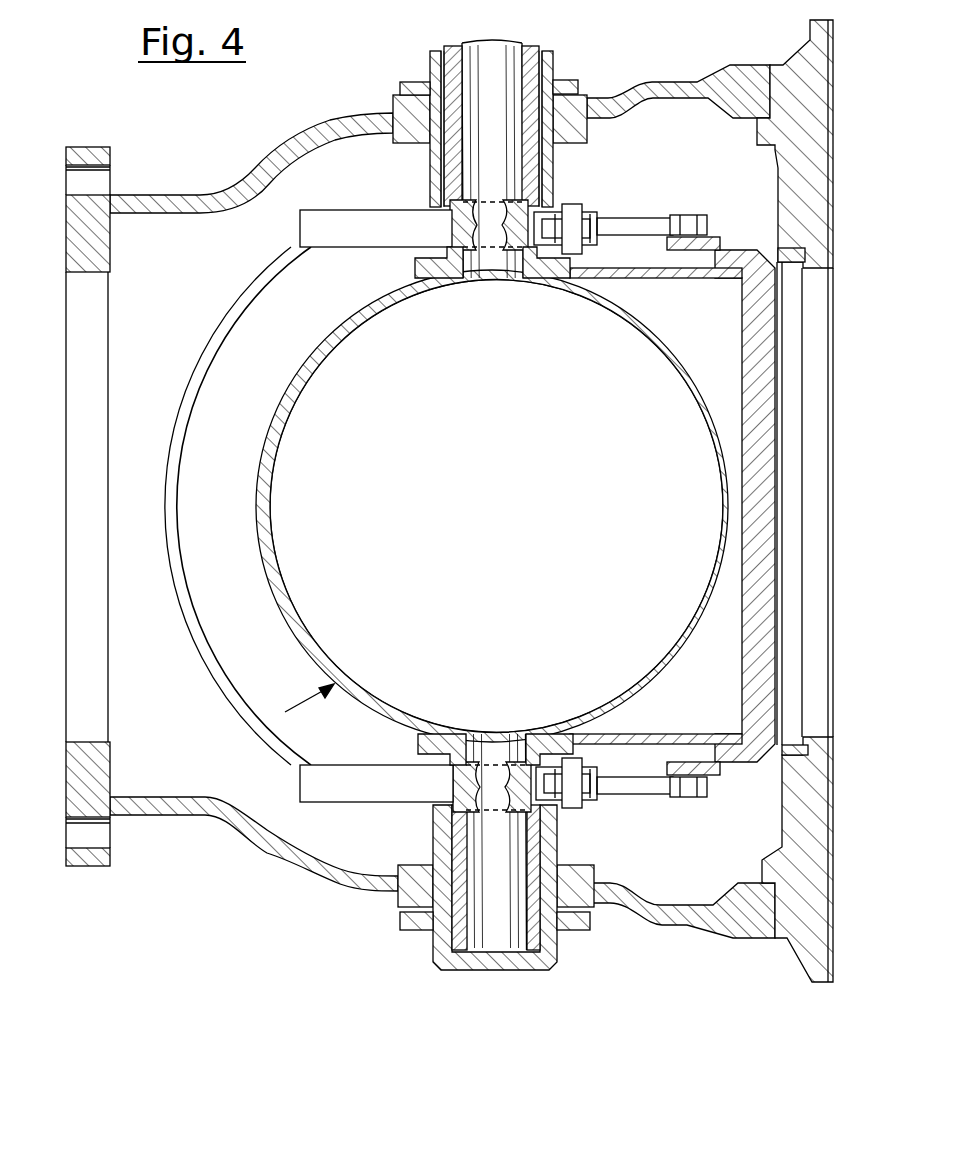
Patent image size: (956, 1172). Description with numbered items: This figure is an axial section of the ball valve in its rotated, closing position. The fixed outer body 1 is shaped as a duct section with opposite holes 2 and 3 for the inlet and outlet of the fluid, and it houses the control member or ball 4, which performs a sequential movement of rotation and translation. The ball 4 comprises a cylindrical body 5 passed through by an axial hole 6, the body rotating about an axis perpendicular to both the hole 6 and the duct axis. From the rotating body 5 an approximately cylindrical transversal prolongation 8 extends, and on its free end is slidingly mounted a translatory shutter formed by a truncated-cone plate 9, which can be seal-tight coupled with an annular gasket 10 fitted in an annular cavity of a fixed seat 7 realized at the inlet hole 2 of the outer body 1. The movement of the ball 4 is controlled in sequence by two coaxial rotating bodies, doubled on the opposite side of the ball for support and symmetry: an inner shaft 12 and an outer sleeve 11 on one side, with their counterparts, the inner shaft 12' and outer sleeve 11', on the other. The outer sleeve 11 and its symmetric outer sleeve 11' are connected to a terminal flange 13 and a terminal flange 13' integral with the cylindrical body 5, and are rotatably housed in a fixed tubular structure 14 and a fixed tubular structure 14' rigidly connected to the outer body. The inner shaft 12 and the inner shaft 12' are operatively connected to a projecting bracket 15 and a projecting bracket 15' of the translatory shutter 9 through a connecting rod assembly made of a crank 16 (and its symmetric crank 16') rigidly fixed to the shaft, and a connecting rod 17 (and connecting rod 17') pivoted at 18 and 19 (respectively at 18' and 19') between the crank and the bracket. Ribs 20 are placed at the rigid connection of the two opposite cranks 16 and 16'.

The fixed outer body 1 is at (295, 150).
The inlet hole 2 is at (815, 275).
The outlet hole 3 is at (85, 273).
The ball 4 is at (297, 701).
The cylindrical body 5 is at (288, 392).
The axial hole 6 is at (483, 486).
The fixed seat 7 is at (796, 268).
The transversal prolongation 8 is at (668, 280).
The truncated-cone plate 9 is at (745, 682).
The annular gasket 10 is at (790, 248).
The outer sleeve 11 is at (516, 126).
The outer sleeve 11' is at (462, 887).
The inner shaft 12 is at (447, 159).
The inner shaft 12' is at (452, 842).
The terminal flange 13 is at (462, 270).
The terminal flange 13' is at (495, 722).
The fixed tubular structure 14 is at (504, 61).
The fixed tubular structure 14' is at (482, 943).
The projecting bracket 15 is at (662, 247).
The projecting bracket 15' is at (667, 756).
The crank 16 is at (376, 205).
The crank 16' is at (374, 805).
The connecting rod 17 is at (637, 203).
The connecting rod 17' is at (635, 807).
The pivot 18 is at (581, 210).
The pivot 18' is at (573, 805).
The pivot 19 is at (707, 201).
The pivot 19' is at (697, 811).
The ribs 20 is at (190, 382).